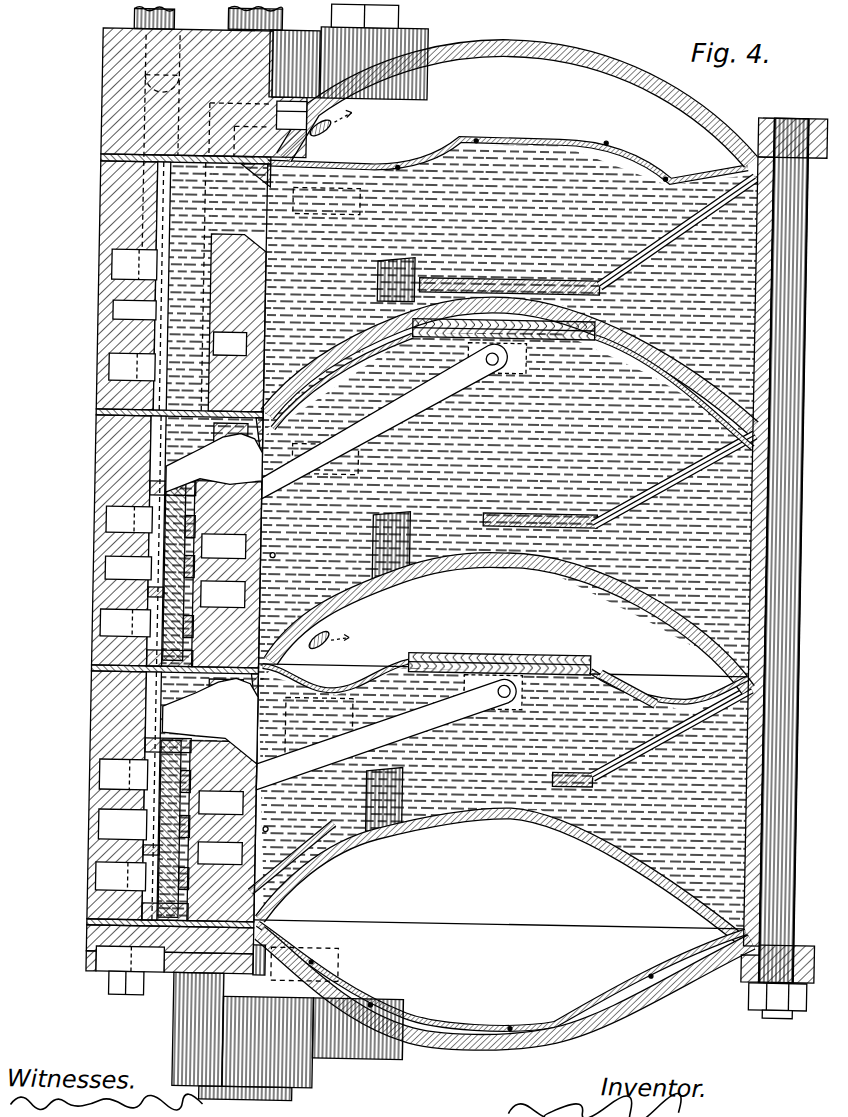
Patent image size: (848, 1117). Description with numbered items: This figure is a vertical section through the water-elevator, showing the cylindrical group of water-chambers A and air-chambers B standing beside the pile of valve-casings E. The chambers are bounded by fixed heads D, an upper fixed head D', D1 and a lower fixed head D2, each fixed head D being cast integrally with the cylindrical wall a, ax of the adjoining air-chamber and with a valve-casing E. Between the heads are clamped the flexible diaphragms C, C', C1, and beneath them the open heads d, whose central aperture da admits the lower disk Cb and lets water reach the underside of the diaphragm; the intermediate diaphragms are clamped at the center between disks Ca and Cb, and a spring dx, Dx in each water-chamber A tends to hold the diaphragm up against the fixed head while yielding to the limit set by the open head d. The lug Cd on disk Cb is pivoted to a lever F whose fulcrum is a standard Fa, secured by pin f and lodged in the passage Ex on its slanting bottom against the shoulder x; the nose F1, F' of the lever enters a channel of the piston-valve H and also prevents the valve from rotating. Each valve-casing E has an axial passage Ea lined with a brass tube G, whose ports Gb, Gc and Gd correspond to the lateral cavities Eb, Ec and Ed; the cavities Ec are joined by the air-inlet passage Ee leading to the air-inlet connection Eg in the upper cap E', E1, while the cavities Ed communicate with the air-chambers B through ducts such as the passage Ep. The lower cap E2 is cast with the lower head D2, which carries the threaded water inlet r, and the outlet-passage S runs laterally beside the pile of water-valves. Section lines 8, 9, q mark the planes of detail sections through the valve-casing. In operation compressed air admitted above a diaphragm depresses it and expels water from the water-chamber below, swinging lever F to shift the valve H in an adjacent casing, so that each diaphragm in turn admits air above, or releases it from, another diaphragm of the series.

The air-inlet connection Eg is at (126, 22).
The outlet-passage S is at (232, 24).
The upper fixed head D' is at (519, 85).
The upper dome D1 is at (560, 48).
The upper cap of valve-casings E' is at (181, 152).
The upper cap casting E1 is at (96, 118).
The air passage Ep is at (370, 134).
The air-chamber B is at (523, 482).
The moving head or diaphragm C is at (506, 573).
The diaphragm plate C1 is at (598, 150).
The air-inlet passage Ee is at (145, 200).
The axial passage Ea is at (160, 222).
The valve-casing E is at (151, 541).
The lateral cavity Eb is at (112, 270).
The passage for standard Ex is at (314, 784).
The rivets ax is at (470, 142).
The water-chamber A is at (618, 1042).
The open head d is at (675, 236).
The inlet cavity Ec is at (112, 310).
The brass lining-tube G is at (150, 316).
The lateral cavity Ed is at (372, 292).
The upper clamping disk Ca is at (580, 318).
The fixed head or partition D is at (503, 621).
The lower clamping disk Cb is at (570, 344).
The plate C' is at (653, 385).
The spring dx is at (646, 402).
The central aperture da is at (572, 525).
The cylindrical wall a is at (760, 284).
The lever F is at (389, 567).
The pivot-pin f is at (242, 460).
The standard Fa is at (278, 492).
The port Gd is at (196, 546).
The section line 8 is at (100, 520).
The section line 9 is at (164, 567).
The section line q is at (100, 570).
The shoulder or stop x is at (274, 832).
The port Gb is at (152, 520).
The short lever F' is at (142, 597).
The nose of lever F1 is at (166, 480).
The port Gc is at (150, 592).
The piston-valve H is at (150, 610).
The lower cap of valve-casings E2 is at (96, 936).
The lug Cd is at (520, 366).
The diaphragm joint Dx is at (612, 670).
The threaded inlet r is at (296, 1096).
The lower fixed head D2 is at (668, 985).